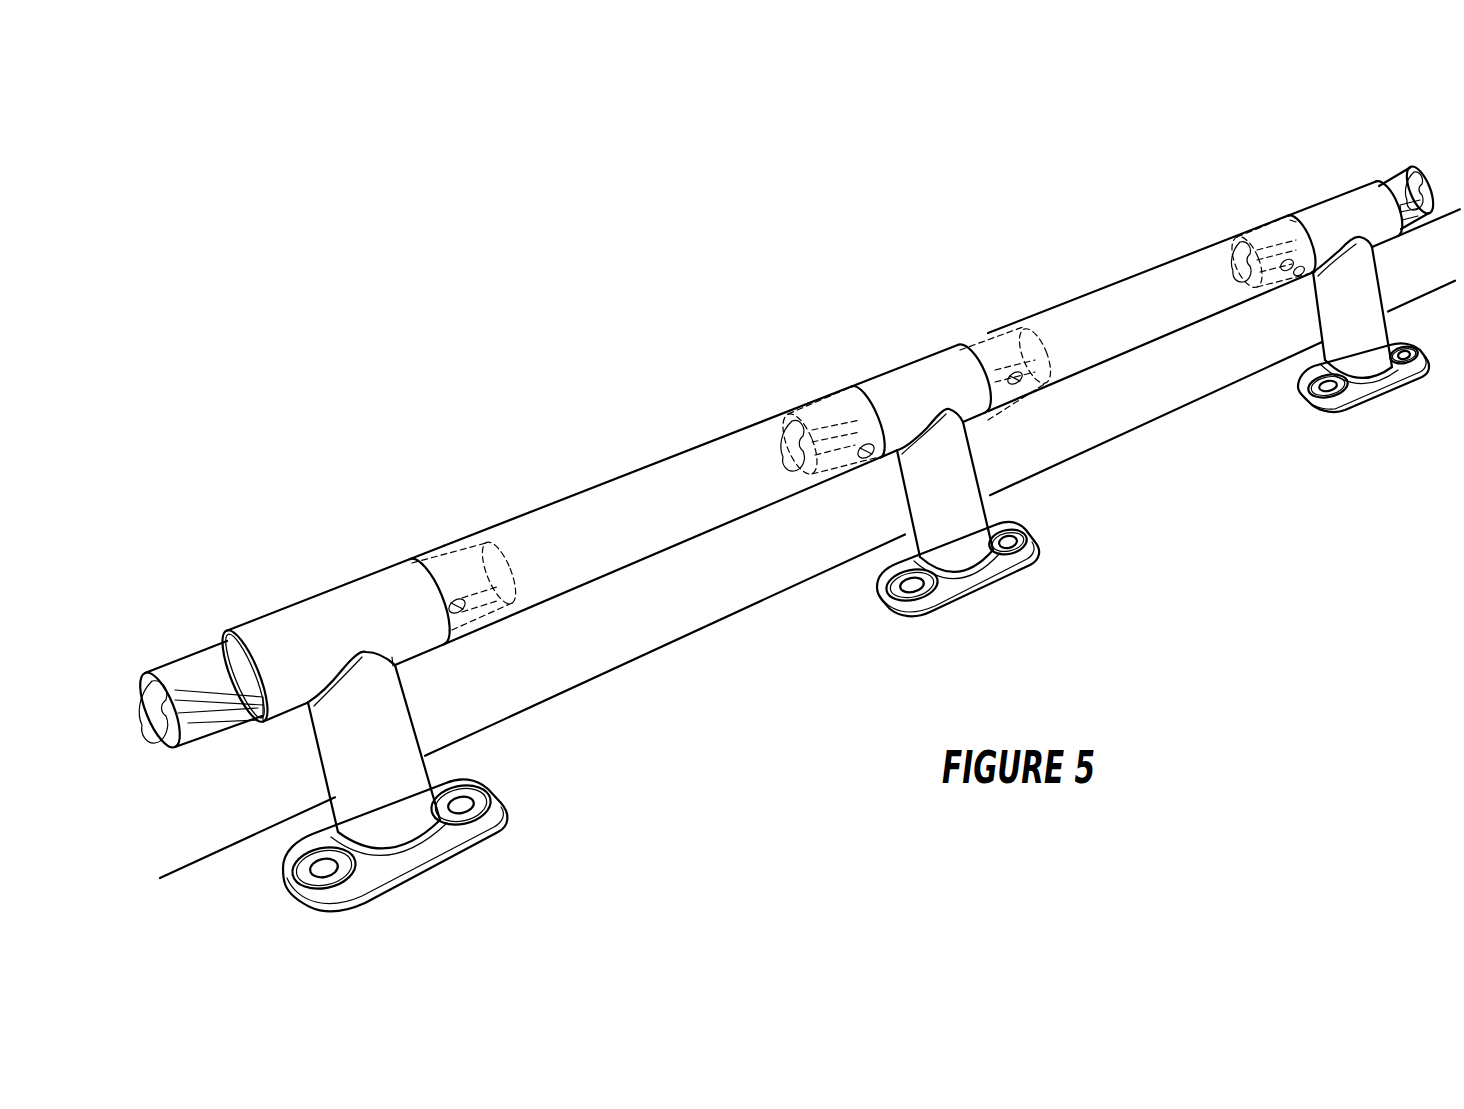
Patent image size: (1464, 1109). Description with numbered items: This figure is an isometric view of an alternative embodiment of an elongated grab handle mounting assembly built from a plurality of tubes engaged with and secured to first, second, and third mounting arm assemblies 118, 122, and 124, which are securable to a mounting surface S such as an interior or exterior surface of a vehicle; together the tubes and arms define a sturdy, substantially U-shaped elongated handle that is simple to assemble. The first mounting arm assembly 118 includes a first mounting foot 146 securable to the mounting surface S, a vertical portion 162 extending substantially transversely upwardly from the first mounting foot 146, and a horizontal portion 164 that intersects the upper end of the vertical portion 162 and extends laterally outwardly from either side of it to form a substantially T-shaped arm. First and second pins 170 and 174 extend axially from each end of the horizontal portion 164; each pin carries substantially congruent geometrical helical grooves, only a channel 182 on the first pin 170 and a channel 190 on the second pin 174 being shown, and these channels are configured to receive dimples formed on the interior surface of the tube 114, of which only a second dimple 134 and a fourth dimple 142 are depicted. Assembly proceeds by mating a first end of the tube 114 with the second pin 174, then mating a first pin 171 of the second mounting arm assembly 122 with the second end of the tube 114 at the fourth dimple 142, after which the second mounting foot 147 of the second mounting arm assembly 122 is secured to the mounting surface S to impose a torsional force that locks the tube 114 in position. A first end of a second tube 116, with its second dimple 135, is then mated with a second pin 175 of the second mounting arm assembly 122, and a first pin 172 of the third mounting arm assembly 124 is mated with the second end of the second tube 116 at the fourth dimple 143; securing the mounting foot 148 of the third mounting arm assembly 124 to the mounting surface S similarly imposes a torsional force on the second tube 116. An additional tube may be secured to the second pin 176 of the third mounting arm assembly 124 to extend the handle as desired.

The mounting surface S is at (1195, 417).
The tube 114 is at (1135, 290).
The second tube 116 is at (643, 477).
The first mounting arm assembly 118 is at (1294, 171).
The second mounting arm assembly 122 is at (914, 347).
The third mounting arm assembly 124 is at (326, 584).
The second dimple 134 is at (1301, 282).
The second dimple 135 is at (870, 463).
The fourth dimple 142 is at (1027, 390).
The fourth dimple 143 is at (469, 618).
The first mounting foot 146 is at (1370, 402).
The second mounting foot 147 is at (997, 588).
The mounting foot 148 is at (432, 868).
The vertical portion 162 is at (1383, 333).
The horizontal portion 164 is at (1337, 208).
The first pin 170 is at (1403, 182).
The first pin 171 is at (1005, 335).
The first pin 172 is at (457, 553).
The second pin 174 is at (1263, 235).
The second pin 175 is at (817, 408).
The second pin 176 is at (200, 657).
The channel 182 is at (1405, 226).
The channel 190 is at (1287, 280).